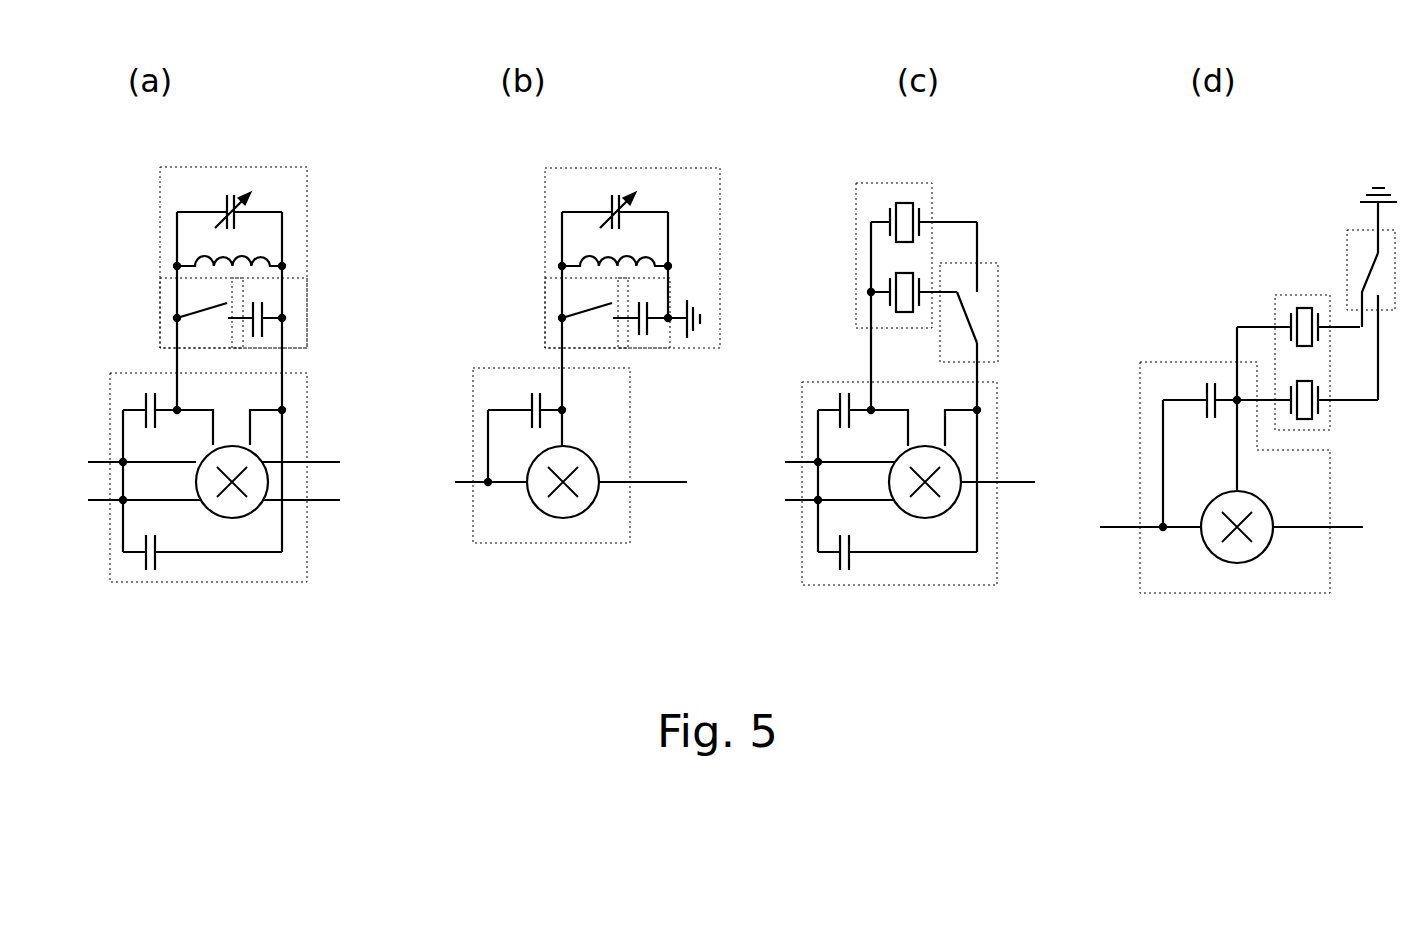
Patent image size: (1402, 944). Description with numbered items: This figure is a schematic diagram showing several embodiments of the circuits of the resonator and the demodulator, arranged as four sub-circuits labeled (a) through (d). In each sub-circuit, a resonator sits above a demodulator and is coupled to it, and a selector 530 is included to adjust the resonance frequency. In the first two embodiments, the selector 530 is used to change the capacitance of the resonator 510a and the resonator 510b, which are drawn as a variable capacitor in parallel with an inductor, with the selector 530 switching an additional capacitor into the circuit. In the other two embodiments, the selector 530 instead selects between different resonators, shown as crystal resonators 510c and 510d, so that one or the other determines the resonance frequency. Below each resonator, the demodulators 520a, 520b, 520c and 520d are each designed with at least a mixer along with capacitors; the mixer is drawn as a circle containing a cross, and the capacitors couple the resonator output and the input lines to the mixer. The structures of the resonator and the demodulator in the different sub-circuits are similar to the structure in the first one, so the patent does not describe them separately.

The resonator 510a is at (260, 168).
The resonator 510b is at (668, 168).
The resonator 510c is at (907, 183).
The resonator 510d is at (1302, 295).
The demodulator 520a is at (262, 586).
The demodulator 520b is at (576, 546).
The demodulator 520c is at (944, 586).
The demodulator 520d is at (1248, 596).
The selector 530 is at (160, 318).